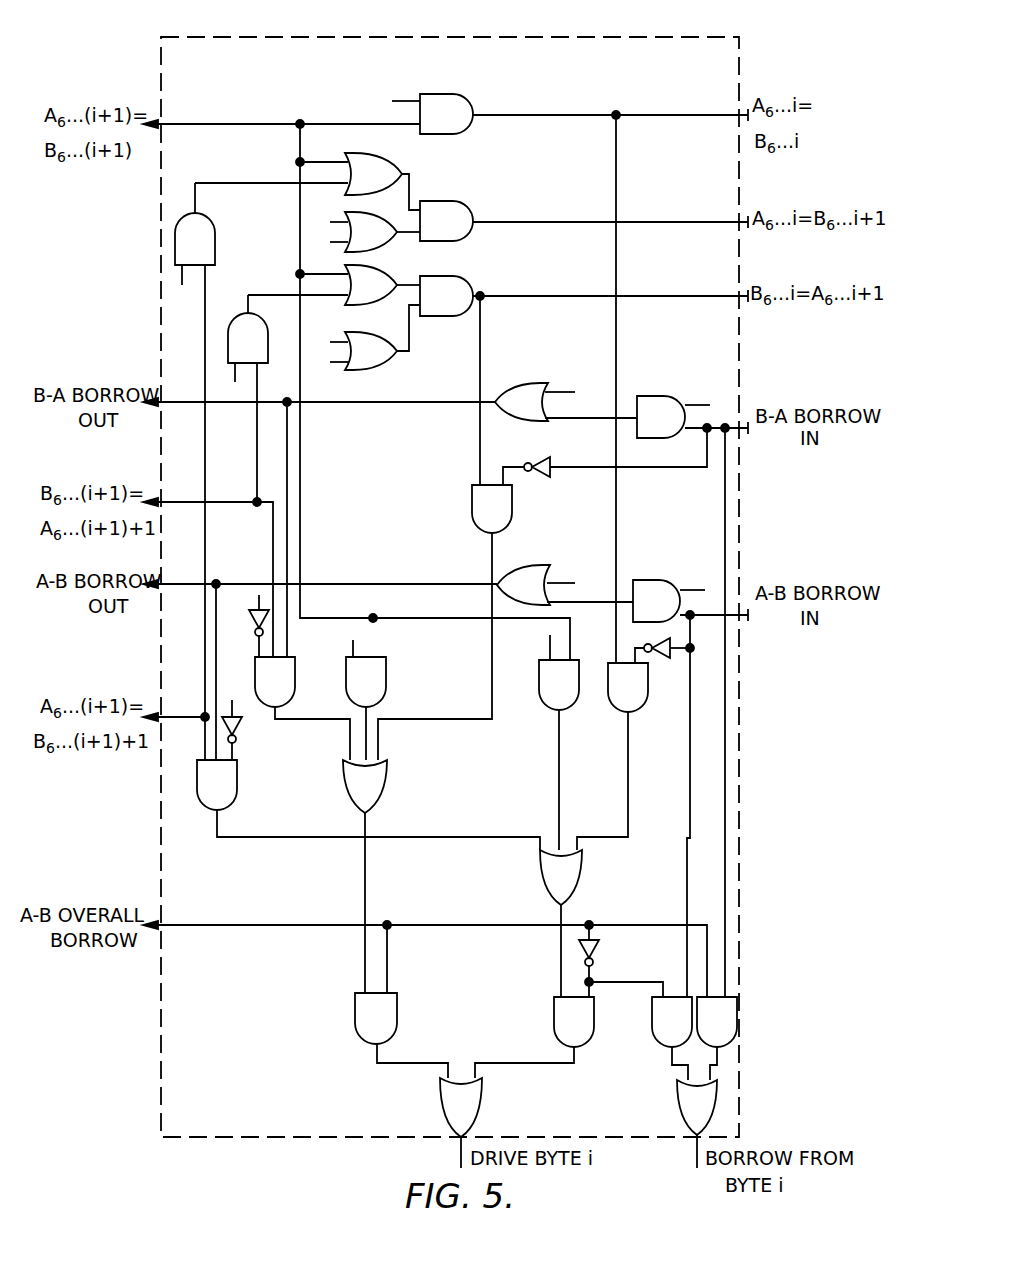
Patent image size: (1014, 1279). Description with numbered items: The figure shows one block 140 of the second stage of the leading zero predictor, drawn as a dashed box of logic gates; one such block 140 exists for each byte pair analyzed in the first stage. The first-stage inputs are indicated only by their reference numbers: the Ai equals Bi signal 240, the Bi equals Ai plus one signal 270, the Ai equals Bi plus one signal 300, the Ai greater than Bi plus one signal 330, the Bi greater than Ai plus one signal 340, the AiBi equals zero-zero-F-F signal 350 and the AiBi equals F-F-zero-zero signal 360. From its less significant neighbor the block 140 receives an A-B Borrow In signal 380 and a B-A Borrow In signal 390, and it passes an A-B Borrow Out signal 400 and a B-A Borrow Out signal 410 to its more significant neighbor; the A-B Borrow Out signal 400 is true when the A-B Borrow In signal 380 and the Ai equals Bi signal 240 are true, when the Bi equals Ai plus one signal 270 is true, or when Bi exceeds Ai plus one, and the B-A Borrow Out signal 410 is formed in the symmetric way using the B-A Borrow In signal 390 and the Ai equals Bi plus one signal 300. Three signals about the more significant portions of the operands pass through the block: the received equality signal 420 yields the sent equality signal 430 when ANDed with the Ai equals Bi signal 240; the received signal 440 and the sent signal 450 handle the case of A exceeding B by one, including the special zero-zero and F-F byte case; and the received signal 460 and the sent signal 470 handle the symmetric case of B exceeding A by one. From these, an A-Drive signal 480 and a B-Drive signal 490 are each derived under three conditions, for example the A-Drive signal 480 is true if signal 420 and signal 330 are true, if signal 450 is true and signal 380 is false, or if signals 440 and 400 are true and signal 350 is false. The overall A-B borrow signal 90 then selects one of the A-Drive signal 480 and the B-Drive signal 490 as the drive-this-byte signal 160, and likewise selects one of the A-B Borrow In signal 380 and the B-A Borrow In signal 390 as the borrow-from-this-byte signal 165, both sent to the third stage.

The block 140 is at (650, 37).
The Ai = Bi signal 240 is at (392, 101).
The Bi = Ai + 1 signal 270 is at (333, 250).
The Ai = Bi + 1 signal 300 is at (333, 362).
The Ai Bi + 1 signal 330 is at (560, 405).
The Bi Ai + 1 signal 340 is at (560, 596).
The AiBi = 00FF signal 350 is at (335, 222).
The AiBi = FF00 signal 360 is at (335, 342).
The A-B Borrow In signal 380 is at (744, 630).
The B-A Borrow In signal 390 is at (744, 445).
The A-B Borrow Out signal 400 is at (190, 584).
The B-A Borrow Out signal 410 is at (186, 402).
The A6...(i+1) = B6...(i+1) signal 420 is at (207, 124).
The A6...i = B6...i signal 430 is at (705, 115).
The A6...(i+1) = B6...(i+1) + 1 signal 440 is at (190, 717).
The A6...i = B6...i + 1 signal 450 is at (709, 222).
The B6...(i+1) = A6...(i+1) + 1 signal 460 is at (190, 502).
The B6...i = A6...i + 1 signal 470 is at (711, 296).
The A-Drive signal 480 is at (563, 918).
The B-Drive signal 490 is at (365, 885).
The overall A-B borrow signal 90 is at (168, 925).
The drive-this-byte signal 160 is at (461, 1160).
The borrow-from-this-byte signal 165 is at (697, 1160).